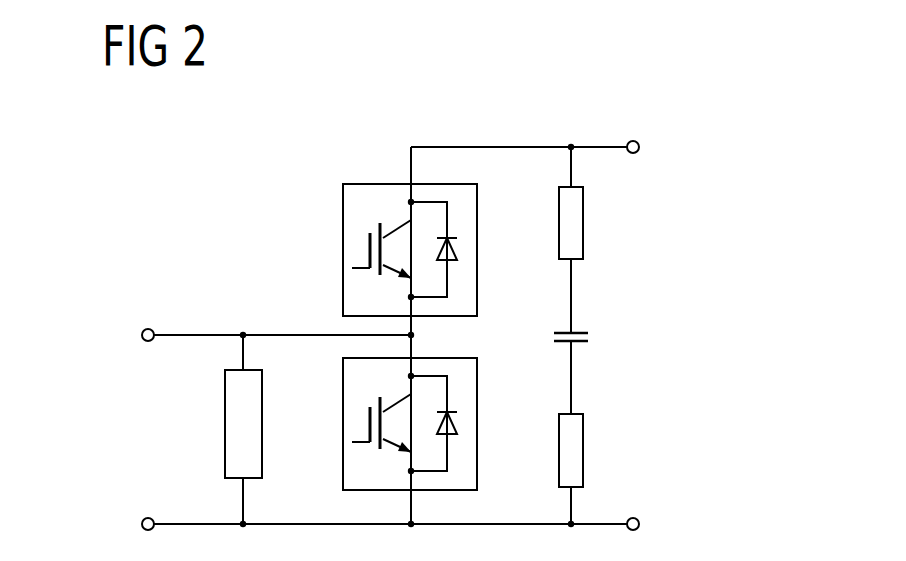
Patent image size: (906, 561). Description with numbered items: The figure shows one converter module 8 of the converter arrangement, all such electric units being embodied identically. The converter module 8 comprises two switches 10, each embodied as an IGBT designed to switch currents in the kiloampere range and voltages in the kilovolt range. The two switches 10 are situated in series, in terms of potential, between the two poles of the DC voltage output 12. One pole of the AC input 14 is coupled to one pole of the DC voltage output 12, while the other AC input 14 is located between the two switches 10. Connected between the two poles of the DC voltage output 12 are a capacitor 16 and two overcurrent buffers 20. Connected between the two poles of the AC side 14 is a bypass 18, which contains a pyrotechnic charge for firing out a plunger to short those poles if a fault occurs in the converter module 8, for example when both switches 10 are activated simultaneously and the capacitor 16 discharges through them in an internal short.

The converter module 8 is at (637, 314).
The switch 10 is at (343, 245).
The DC voltage output 12 is at (640, 147).
The AC input 14 is at (142, 335).
The capacitor 16 is at (556, 333).
The bypass 18 is at (225, 440).
The overcurrent buffer 20 is at (559, 237).